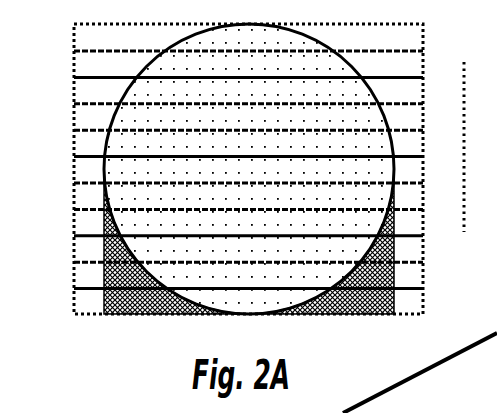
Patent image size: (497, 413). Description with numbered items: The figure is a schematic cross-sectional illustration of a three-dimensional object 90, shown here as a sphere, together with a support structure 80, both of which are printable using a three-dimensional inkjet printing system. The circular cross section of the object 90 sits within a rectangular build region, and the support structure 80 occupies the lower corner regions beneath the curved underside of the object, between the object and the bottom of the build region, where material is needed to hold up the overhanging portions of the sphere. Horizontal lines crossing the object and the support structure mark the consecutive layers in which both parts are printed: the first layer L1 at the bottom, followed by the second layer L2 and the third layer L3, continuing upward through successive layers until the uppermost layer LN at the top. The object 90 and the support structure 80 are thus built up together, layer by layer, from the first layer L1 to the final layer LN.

The support structure 80 is at (102, 257).
The 3D object 90 is at (122, 123).
The first layer L1 is at (423, 302).
The second layer L2 is at (423, 273).
The third layer L3 is at (423, 248).
The N-th layer LN is at (423, 40).